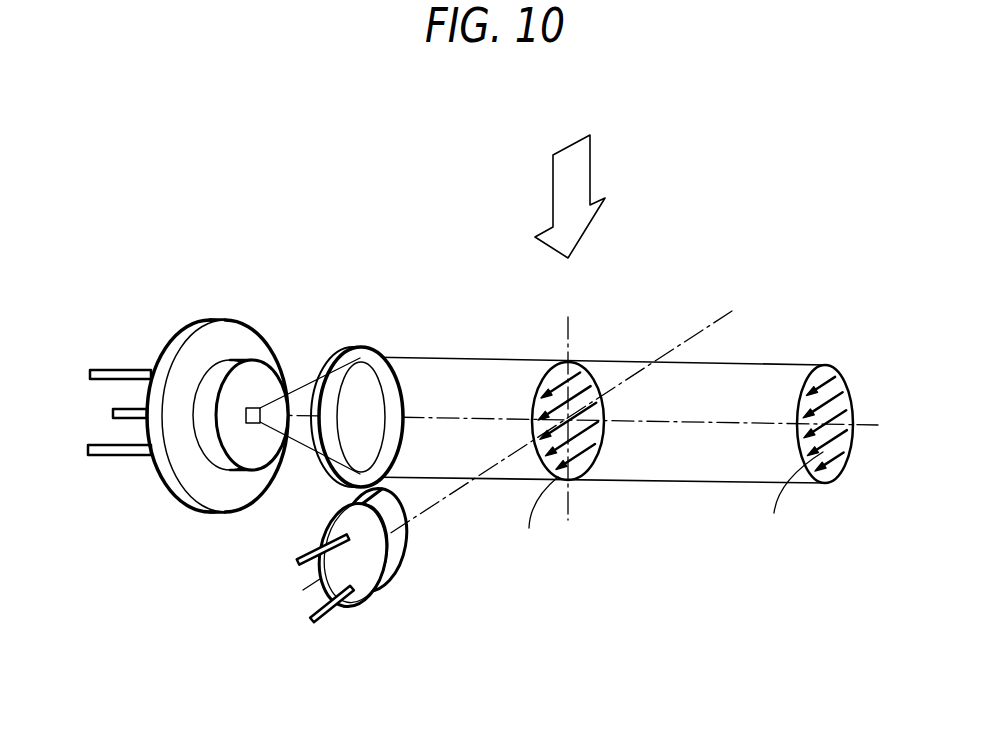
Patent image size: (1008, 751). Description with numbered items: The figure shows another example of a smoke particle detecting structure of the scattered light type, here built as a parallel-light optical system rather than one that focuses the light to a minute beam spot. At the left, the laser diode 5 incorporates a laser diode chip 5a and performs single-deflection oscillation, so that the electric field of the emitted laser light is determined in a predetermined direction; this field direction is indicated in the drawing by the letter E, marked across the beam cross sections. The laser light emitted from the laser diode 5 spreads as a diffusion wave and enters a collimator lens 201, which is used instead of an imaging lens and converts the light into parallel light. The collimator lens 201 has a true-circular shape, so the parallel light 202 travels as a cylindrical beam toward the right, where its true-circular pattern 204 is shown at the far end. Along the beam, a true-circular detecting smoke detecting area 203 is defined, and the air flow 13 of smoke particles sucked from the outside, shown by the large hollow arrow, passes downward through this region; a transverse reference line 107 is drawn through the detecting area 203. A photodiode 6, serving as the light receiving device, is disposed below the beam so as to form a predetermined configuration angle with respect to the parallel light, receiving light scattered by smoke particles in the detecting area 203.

The laser diode 5 is at (221, 336).
The laser diode chip 5a is at (253, 425).
The photodiode 6 is at (370, 593).
The air flow 13 is at (584, 170).
The reference axis 107 is at (571, 514).
The collimator lens 201 is at (362, 350).
The collimated light beam 202 is at (474, 357).
The true-circular detecting smoke detecting area 203 is at (578, 378).
The true-circular pattern 204 is at (837, 372).
The electric field vector E is at (671, 505).